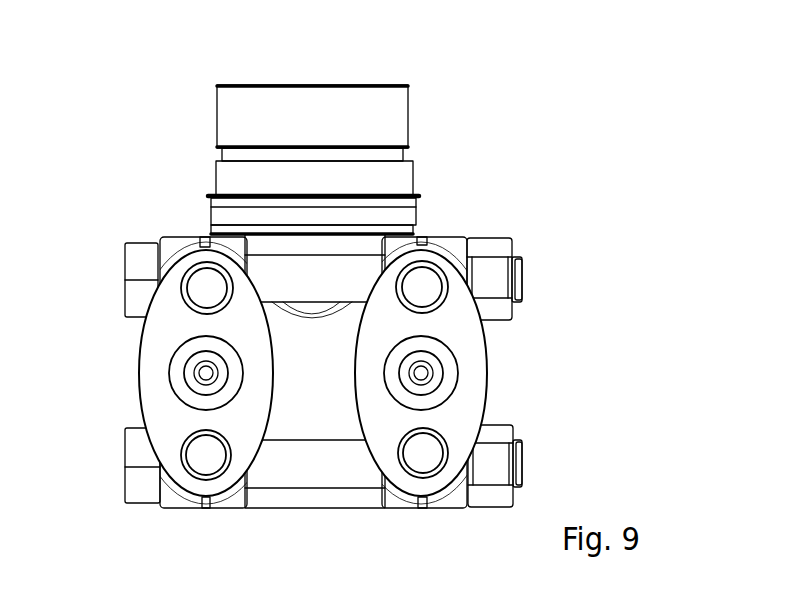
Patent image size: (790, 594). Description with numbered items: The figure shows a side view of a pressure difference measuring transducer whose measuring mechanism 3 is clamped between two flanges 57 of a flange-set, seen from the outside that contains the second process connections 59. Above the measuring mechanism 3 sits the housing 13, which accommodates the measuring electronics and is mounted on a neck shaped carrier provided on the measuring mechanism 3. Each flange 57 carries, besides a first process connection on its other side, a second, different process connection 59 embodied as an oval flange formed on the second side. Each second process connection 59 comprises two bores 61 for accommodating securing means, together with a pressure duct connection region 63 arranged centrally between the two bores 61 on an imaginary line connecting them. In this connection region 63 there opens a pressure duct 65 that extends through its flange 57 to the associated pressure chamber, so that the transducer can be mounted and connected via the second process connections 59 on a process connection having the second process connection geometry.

The measuring mechanism 3 is at (305, 468).
The housing 13 is at (400, 150).
The flange 57 is at (195, 240).
The second process connection 59 is at (162, 333).
The bore 61 is at (205, 290).
The pressure duct connection region 63 is at (175, 368).
The pressure duct 65 is at (206, 373).